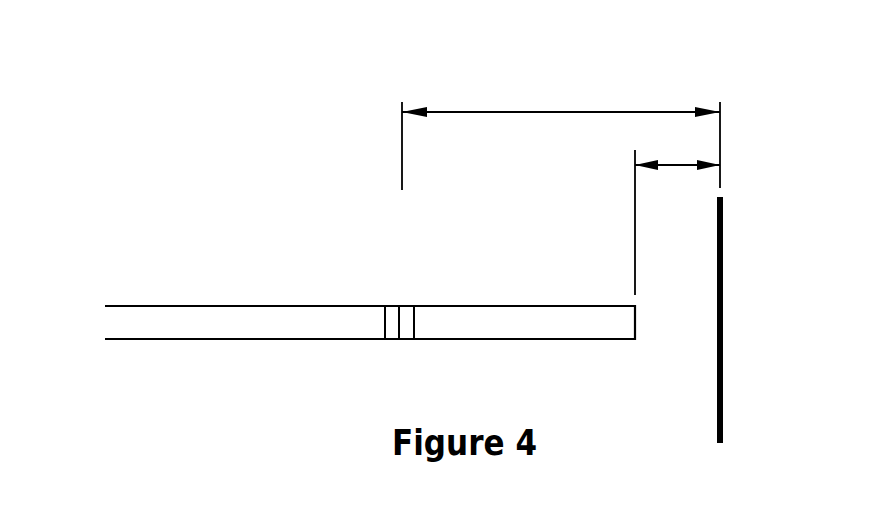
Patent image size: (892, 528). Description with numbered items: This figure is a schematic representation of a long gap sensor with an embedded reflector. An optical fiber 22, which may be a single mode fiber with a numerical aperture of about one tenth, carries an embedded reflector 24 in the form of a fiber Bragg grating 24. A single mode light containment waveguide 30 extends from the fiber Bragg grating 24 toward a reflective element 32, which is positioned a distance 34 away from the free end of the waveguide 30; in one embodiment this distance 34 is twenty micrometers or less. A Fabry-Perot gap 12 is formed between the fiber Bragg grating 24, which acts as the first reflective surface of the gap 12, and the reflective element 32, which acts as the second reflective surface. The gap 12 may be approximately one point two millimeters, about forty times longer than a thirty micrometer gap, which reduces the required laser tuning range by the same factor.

The gap 12 is at (540, 111).
The optical fiber 22 is at (168, 318).
The embedded reflector 24 is at (403, 303).
The single mode light containment waveguide 30 is at (547, 323).
The reflective element 32 is at (718, 365).
The distance 34 is at (688, 163).